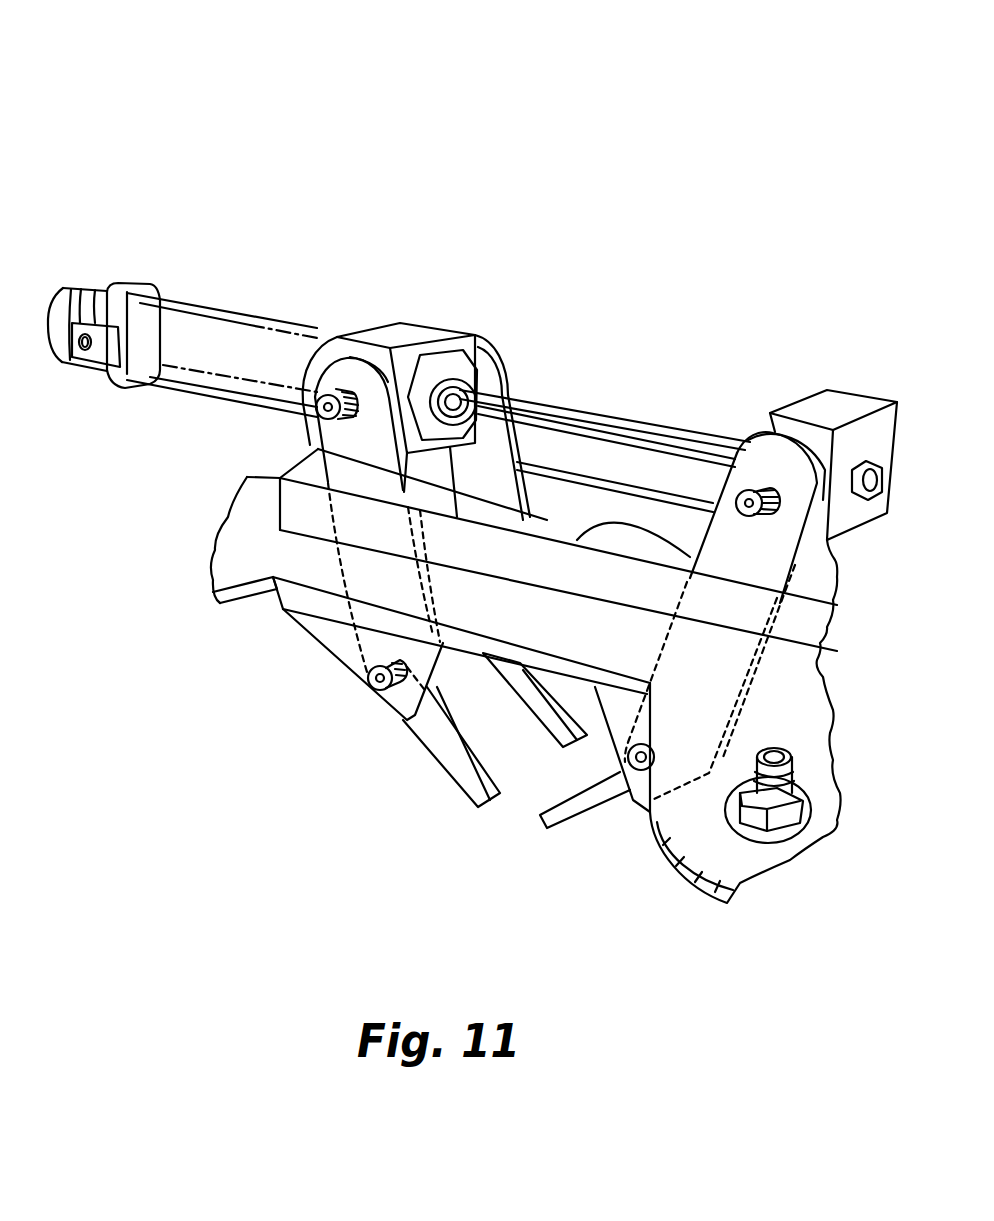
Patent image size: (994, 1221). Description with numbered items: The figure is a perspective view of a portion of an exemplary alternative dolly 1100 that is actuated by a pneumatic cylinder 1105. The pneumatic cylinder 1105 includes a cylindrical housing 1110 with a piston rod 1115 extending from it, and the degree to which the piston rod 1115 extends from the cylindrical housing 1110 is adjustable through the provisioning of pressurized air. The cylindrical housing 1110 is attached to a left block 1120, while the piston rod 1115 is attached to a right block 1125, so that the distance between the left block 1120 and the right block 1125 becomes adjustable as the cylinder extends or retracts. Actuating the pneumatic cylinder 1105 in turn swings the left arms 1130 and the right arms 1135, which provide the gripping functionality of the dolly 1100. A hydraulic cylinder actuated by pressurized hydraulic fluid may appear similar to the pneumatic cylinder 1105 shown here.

The dolly 1100 is at (675, 186).
The pneumatic cylinder 1105 is at (313, 306).
The cylindrical housing 1110 is at (213, 380).
The piston rod 1115 is at (617, 413).
The left block 1120 is at (422, 327).
The right block 1125 is at (828, 407).
The left arms 1130 is at (430, 808).
The right arms 1135 is at (577, 810).